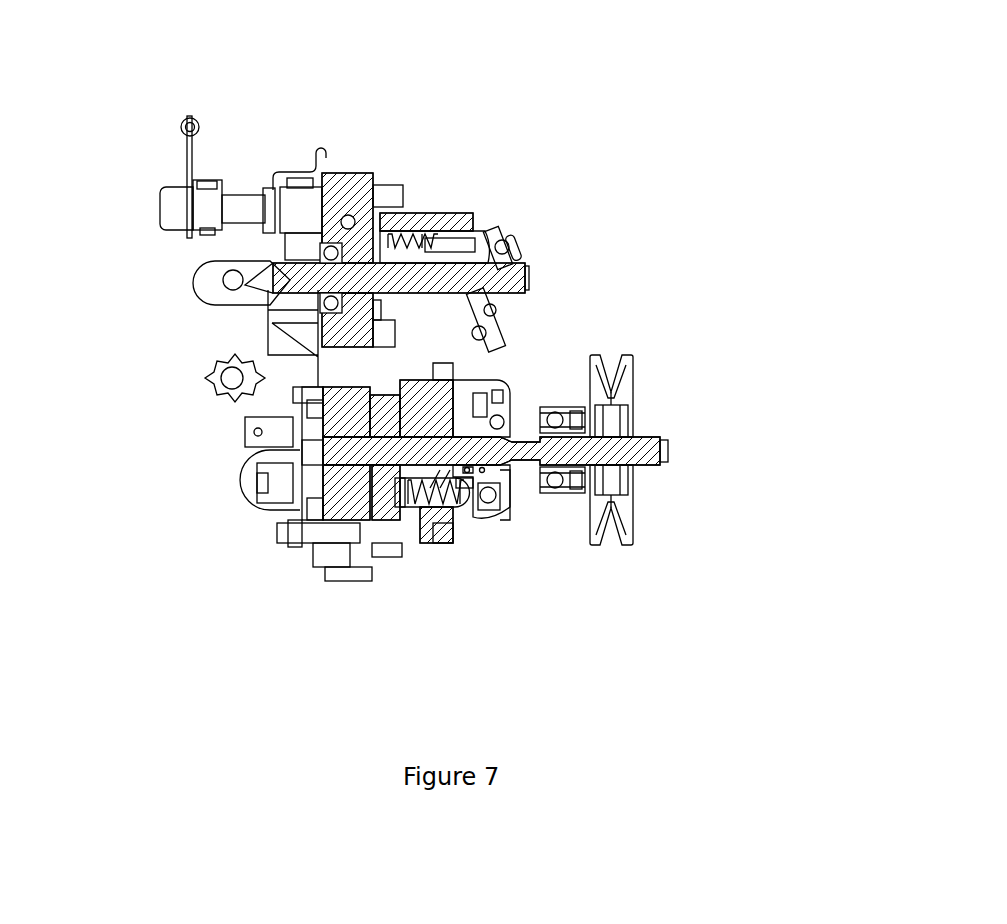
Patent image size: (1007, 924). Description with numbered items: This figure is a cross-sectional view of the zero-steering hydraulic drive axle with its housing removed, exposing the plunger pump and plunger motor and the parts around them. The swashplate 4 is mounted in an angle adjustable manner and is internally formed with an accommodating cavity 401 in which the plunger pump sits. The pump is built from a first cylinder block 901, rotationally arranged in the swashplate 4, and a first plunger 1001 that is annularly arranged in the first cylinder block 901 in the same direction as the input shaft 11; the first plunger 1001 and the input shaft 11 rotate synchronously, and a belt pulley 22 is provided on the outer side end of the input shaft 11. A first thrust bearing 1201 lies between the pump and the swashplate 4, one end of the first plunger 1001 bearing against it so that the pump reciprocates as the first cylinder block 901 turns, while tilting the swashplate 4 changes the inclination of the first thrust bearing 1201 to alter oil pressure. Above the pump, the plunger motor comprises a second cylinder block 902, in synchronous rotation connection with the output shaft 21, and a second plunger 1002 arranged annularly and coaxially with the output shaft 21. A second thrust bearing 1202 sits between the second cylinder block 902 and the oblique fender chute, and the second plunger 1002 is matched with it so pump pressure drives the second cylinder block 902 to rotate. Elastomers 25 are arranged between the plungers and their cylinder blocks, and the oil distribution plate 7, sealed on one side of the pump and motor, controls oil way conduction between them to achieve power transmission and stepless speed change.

The oil distribution plate 7 is at (217, 291).
The output shaft 21 is at (335, 284).
The elastomers 25 is at (385, 345).
The second cylinder block 902 is at (470, 213).
The second plunger 1002 is at (485, 213).
The second thrust bearing 1202 is at (537, 223).
The accommodating cavity 401 is at (467, 373).
The swashplate 4 is at (517, 383).
The input shaft 11 is at (562, 447).
The belt pulley 22 is at (630, 507).
The first thrust bearing 1201 is at (497, 499).
The first cylinder block 901 is at (421, 475).
The first plunger 1001 is at (444, 497).